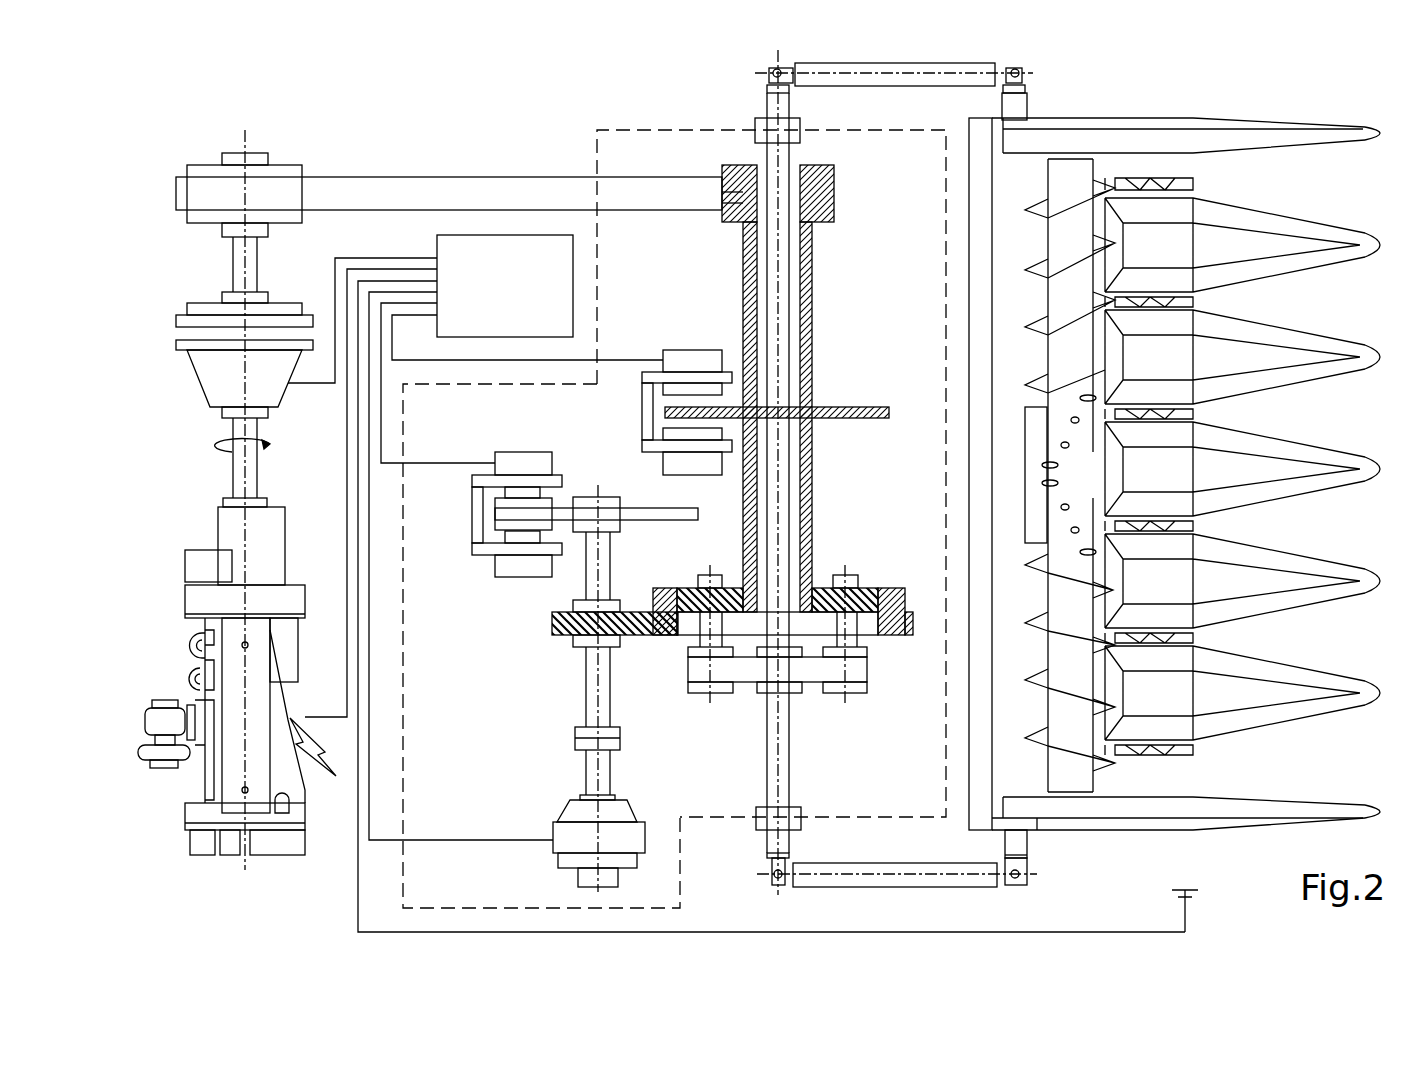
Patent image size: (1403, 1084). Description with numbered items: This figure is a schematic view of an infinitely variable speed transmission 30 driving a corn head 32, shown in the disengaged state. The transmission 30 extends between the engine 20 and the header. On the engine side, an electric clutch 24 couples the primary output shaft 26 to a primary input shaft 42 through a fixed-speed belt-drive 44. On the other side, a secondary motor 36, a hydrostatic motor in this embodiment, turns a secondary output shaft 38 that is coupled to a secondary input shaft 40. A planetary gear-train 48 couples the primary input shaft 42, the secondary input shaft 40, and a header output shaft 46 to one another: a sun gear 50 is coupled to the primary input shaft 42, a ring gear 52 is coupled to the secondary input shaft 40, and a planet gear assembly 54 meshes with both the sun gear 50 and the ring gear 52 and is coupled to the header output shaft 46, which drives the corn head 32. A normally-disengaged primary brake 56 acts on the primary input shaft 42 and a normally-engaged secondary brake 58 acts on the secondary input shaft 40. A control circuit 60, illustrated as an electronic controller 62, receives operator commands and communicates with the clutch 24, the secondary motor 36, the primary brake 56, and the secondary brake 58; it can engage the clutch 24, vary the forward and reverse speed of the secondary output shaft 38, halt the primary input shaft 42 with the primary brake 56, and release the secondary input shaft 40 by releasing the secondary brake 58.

The engine 20 is at (237, 681).
The electric clutch 24 is at (208, 300).
The primary output shaft 26 is at (230, 470).
The infinitely variable speed transmission 30 is at (705, 128).
The corn head 32 is at (1174, 474).
The secondary motor 36 is at (557, 810).
The secondary output shaft 38 is at (607, 770).
The secondary input shaft 40 is at (585, 706).
The primary input shaft 42 is at (812, 262).
The fixed-speed belt-drive 44 is at (435, 170).
The header output shaft 46 is at (787, 373).
The planetary gear-train 48 is at (830, 528).
The sun gear 50 is at (820, 595).
The ring gear 52 is at (650, 640).
The planet gear assembly 54 is at (792, 680).
The primary brake 56 is at (692, 345).
The secondary brake 58 is at (515, 450).
The control circuit 60 is at (335, 862).
The electronic controller 62 is at (505, 286).